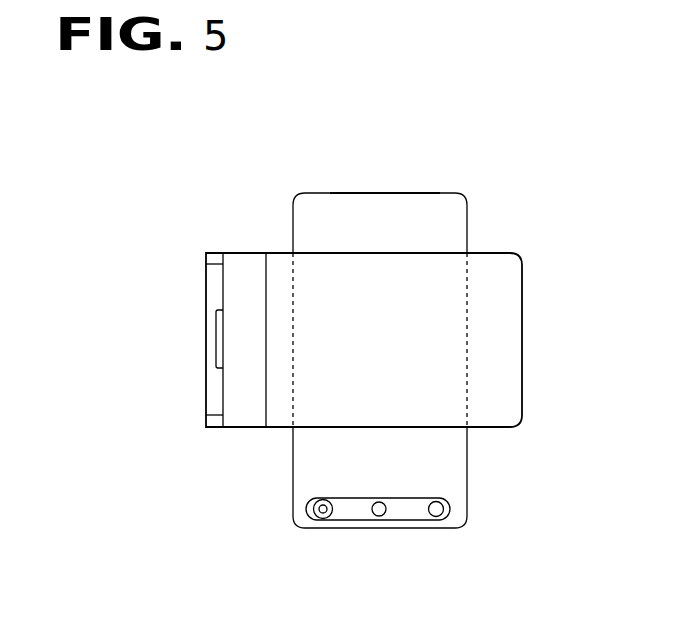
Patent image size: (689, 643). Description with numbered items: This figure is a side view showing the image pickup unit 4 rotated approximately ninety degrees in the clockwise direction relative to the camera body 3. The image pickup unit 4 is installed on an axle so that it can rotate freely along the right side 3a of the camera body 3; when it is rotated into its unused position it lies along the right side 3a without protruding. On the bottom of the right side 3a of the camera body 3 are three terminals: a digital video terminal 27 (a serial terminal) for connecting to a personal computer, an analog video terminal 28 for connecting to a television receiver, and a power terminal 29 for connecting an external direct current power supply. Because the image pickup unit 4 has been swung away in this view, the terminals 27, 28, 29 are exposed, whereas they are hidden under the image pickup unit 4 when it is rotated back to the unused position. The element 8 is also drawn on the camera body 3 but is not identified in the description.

The camera body 3 is at (297, 191).
The right side of the camera body 3a is at (368, 197).
The image pickup unit 4 is at (519, 256).
The connector portion 8 is at (238, 250).
The digital video terminal 27 is at (312, 516).
The analog video terminal 28 is at (380, 518).
The power terminal 29 is at (440, 520).